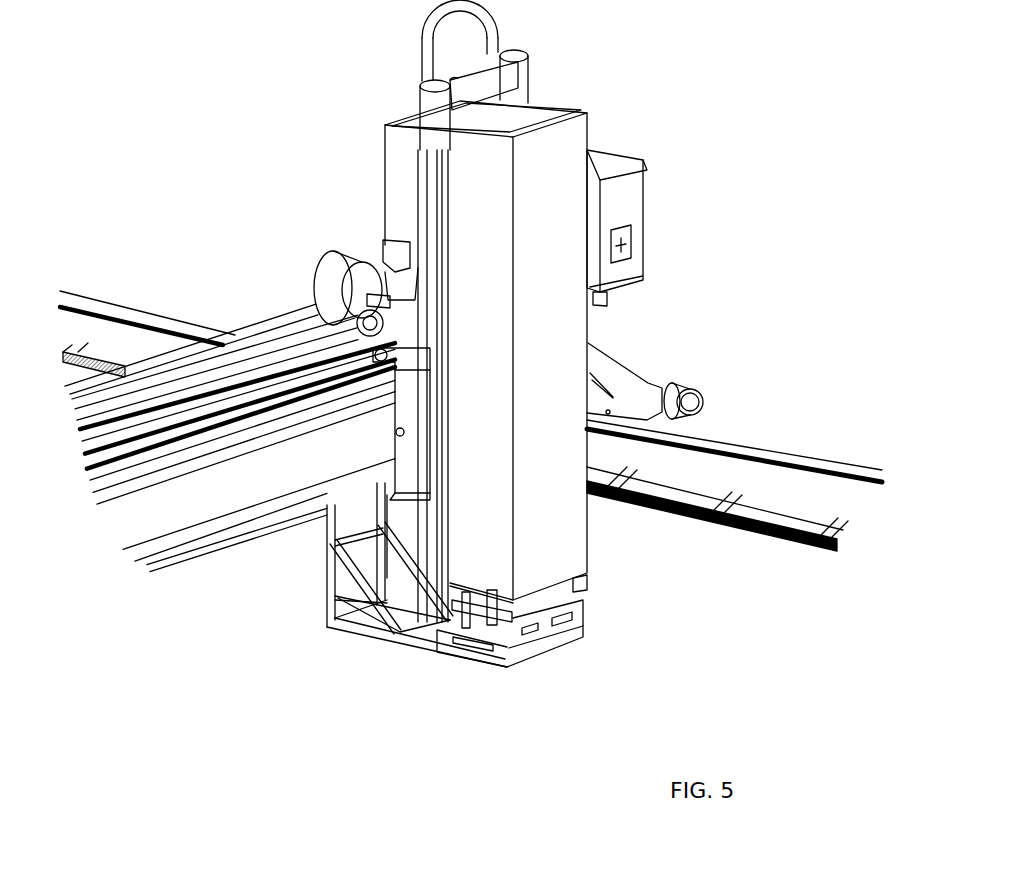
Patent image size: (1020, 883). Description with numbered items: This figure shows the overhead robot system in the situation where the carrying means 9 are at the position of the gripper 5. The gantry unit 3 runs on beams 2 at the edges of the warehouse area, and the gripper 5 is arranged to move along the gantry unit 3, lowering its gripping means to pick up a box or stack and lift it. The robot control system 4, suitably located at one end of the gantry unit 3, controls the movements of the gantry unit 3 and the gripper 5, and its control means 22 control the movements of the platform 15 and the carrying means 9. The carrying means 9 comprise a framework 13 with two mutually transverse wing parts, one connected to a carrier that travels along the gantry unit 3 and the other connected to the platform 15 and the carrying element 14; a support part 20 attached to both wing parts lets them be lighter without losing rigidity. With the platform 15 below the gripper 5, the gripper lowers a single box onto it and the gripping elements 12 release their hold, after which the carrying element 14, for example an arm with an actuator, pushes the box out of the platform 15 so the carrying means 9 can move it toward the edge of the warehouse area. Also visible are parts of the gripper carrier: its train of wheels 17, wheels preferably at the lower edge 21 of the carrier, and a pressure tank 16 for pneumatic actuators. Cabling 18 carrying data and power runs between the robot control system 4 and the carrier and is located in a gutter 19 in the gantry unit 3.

The beam 2 is at (745, 447).
The gantry unit 3 is at (168, 526).
The robot control system 4 is at (598, 150).
The gripper 5 is at (578, 535).
The carrying means 9 is at (315, 558).
The gripping elements 12 is at (585, 602).
The framework 13 is at (393, 637).
The carrying element 14 is at (468, 638).
The platform 15 is at (487, 660).
The pressure tank 16 is at (412, 250).
The train of wheels 17 is at (388, 372).
The cabling 18 is at (320, 288).
The gutter 19 is at (262, 335).
The support part 20 is at (338, 602).
The lower edge 21 is at (378, 518).
The control means 22 is at (632, 243).